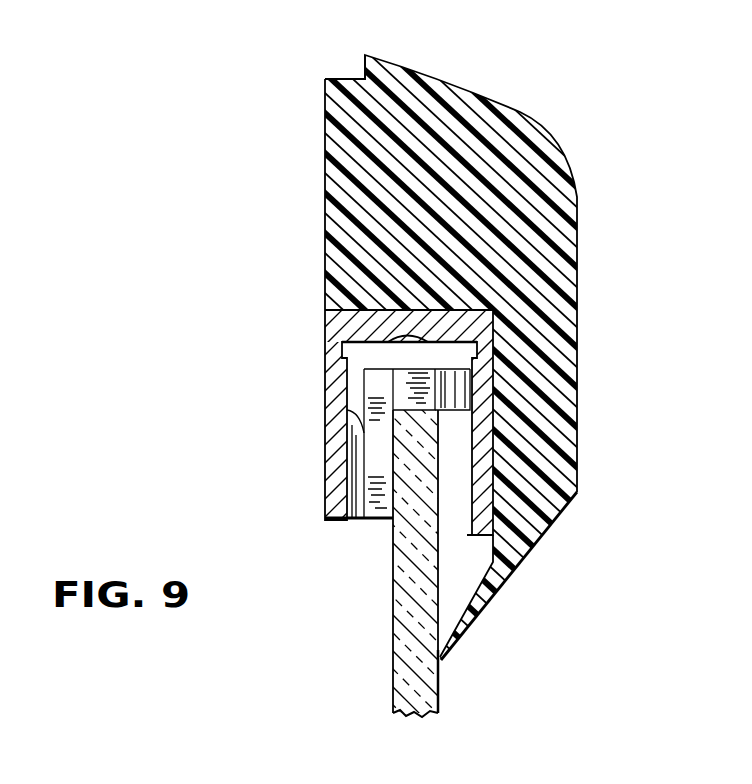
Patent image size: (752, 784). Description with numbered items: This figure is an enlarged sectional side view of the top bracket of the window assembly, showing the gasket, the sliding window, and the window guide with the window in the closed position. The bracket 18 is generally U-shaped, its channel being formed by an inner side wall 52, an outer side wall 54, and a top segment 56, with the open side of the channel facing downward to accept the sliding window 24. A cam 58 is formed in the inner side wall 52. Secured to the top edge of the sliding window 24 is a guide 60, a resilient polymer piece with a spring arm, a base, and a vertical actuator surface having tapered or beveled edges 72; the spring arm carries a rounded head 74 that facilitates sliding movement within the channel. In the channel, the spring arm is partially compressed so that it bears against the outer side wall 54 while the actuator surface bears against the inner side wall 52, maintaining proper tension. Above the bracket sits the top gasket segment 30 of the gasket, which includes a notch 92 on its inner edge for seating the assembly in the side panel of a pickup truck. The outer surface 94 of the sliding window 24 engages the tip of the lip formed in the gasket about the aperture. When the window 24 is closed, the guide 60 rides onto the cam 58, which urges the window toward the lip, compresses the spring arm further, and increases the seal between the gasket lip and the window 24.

The bracket 18 is at (318, 323).
The sliding window 24 is at (408, 618).
The top gasket segment 30 is at (538, 245).
The inner side wall 52 is at (335, 445).
The outer side wall 54 is at (485, 369).
The top segment 56 is at (372, 318).
The cam 58 is at (357, 522).
The guide 60 is at (407, 392).
The tapered edges 72 is at (373, 507).
The rounded head 74 is at (460, 397).
The notch 92 is at (358, 78).
The outer surface 94 is at (440, 683).